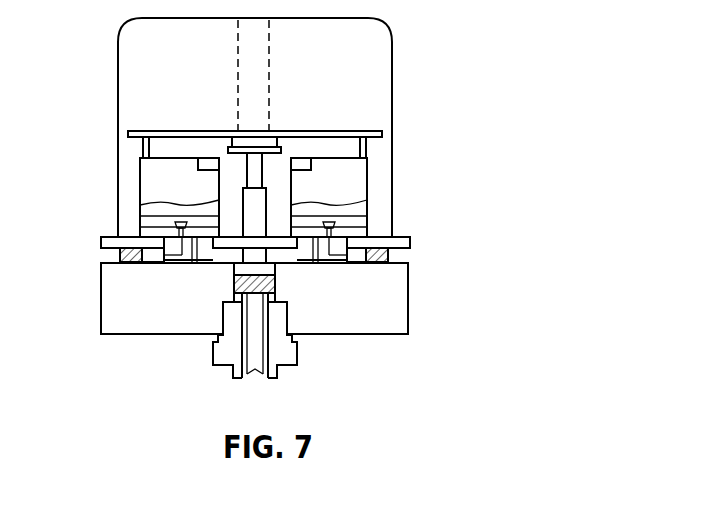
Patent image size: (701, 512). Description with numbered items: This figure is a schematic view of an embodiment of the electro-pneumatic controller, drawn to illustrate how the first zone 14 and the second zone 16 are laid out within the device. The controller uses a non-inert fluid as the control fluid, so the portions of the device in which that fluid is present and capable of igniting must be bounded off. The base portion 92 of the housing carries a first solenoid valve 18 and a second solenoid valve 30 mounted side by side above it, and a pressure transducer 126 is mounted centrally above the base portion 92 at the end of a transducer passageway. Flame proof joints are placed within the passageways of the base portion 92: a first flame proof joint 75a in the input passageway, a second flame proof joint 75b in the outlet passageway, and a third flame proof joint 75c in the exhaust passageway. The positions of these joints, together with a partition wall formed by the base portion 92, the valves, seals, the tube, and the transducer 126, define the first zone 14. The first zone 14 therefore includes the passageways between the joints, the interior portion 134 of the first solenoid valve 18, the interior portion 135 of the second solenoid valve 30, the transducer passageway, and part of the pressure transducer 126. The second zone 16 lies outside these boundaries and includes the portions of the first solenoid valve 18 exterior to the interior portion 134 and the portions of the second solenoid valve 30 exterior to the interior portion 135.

The first zone 14 is at (162, 259).
The second zone 16 is at (160, 175).
The first solenoid valve 18 is at (126, 179).
The second solenoid valve 30 is at (364, 166).
The first flame proof joint 75a is at (122, 253).
The second flame proof joint 75b is at (276, 289).
The third flame proof joint 75c is at (390, 254).
The base portion 92 is at (395, 283).
The pressure transducer 126 is at (258, 142).
The interior portion of the first solenoid valve 134 is at (158, 223).
The interior portion of the second solenoid valve 135 is at (348, 222).